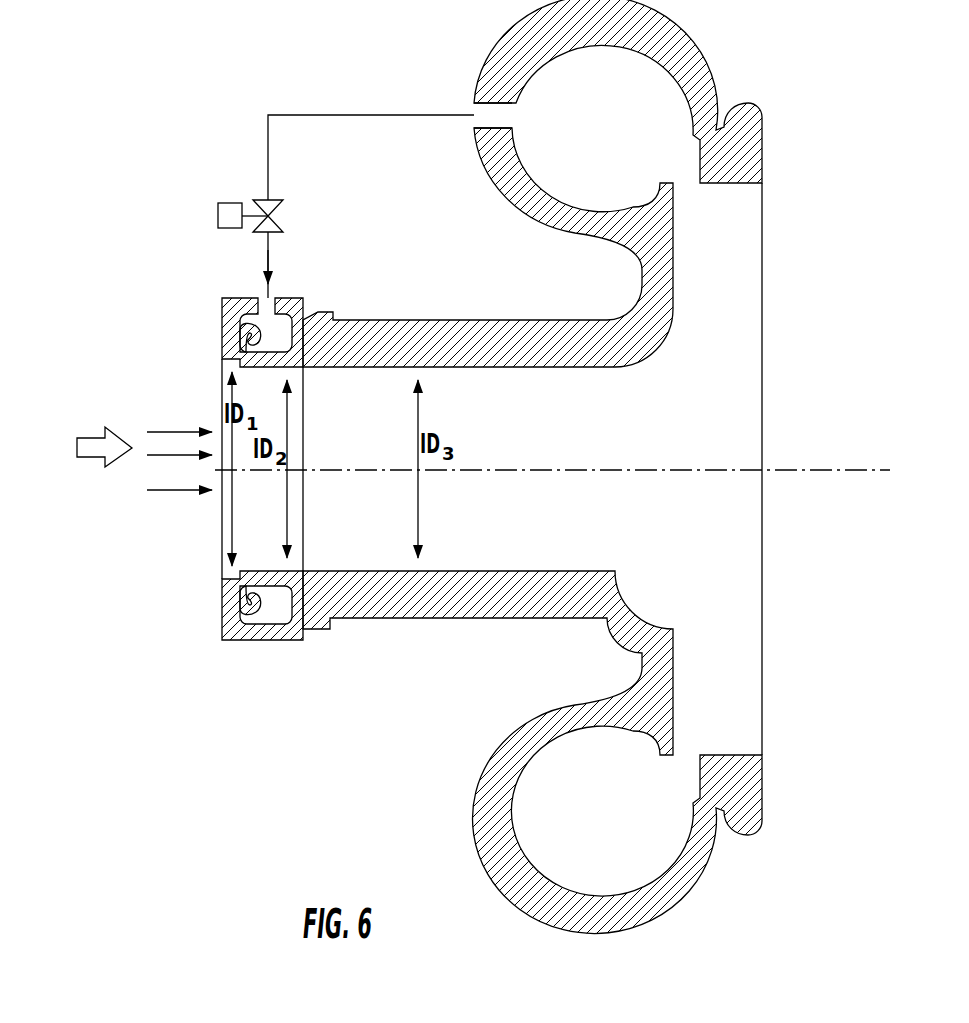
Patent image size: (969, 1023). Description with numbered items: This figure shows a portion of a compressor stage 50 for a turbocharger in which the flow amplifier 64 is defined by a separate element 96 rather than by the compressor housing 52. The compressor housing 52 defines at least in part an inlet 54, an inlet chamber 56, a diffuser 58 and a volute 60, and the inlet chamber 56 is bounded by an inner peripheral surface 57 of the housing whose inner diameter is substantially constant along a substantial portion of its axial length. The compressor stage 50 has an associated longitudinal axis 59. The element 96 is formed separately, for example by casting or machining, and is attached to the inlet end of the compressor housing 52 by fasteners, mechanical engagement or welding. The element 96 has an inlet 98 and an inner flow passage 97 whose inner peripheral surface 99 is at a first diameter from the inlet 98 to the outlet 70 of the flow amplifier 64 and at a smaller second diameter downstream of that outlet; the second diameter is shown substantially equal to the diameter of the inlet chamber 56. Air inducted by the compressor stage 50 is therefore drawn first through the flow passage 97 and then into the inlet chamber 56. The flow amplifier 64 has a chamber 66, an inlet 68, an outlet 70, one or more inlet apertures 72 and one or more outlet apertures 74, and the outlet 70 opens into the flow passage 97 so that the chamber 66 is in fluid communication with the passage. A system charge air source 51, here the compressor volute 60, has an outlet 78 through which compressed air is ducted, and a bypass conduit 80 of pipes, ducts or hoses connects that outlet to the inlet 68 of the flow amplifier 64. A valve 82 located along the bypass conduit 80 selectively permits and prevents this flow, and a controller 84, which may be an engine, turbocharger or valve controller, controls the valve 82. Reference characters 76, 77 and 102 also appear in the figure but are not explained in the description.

The compressor stage 50 is at (160, 90).
The system charge air source 51 is at (438, 95).
The compressor housing 52 is at (558, 238).
The inlet 54 is at (308, 536).
The inlet chamber 56 is at (352, 535).
The inner peripheral surface 57 is at (493, 550).
The diffuser 58 is at (675, 262).
The longitudinal axis 59 is at (834, 470).
The volute 60 is at (650, 104).
The flow amplifier 64 is at (212, 323).
The chamber 66 is at (278, 331).
The inlet 68 is at (247, 287).
The outlet 70 is at (247, 562).
The inlet apertures 72 is at (266, 306).
The outlet apertures 74 is at (244, 348).
The exhaust flow 76 is at (92, 438).
The flow lines 77 is at (170, 432).
The outlet 78 is at (486, 110).
The bypass conduit 80 is at (266, 128).
The valve 82 is at (262, 200).
The controller 84 is at (218, 210).
The element 96 is at (220, 292).
The inner flow passage 97 is at (222, 527).
The inlet 98 is at (222, 571).
The inner peripheral surface 99 is at (283, 592).
The pipe end face 102 is at (297, 520).